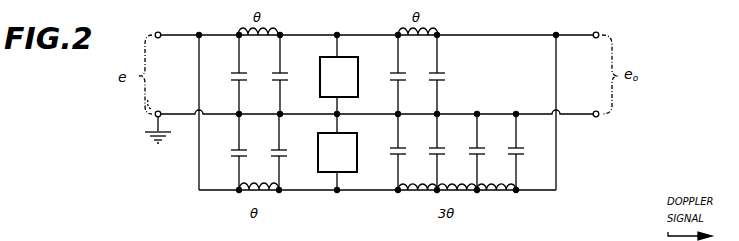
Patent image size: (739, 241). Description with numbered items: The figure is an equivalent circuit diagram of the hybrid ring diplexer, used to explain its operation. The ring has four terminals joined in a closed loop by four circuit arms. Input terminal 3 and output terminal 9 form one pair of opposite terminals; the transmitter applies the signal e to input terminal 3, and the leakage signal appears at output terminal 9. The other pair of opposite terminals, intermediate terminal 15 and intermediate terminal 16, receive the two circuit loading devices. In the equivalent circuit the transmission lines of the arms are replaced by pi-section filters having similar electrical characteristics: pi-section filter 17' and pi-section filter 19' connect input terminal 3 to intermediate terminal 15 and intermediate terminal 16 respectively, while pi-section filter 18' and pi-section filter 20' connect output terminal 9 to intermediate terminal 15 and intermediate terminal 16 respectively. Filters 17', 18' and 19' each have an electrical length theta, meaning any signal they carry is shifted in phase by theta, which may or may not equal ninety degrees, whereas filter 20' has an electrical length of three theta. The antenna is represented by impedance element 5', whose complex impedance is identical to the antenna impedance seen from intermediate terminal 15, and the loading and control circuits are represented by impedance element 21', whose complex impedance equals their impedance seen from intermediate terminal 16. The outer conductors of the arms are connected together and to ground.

The input terminal 3 is at (160, 32).
The output terminal 9 is at (597, 31).
The pi-section filter 17' is at (274, 22).
The pi-section filter 18' is at (432, 22).
The pi-section filter 19' is at (269, 202).
The pi-section filter 20' is at (457, 202).
The intermediate terminal 15 is at (337, 33).
The intermediate terminal 16 is at (337, 193).
The impedance element 5' is at (325, 85).
The impedance element 21' is at (325, 143).